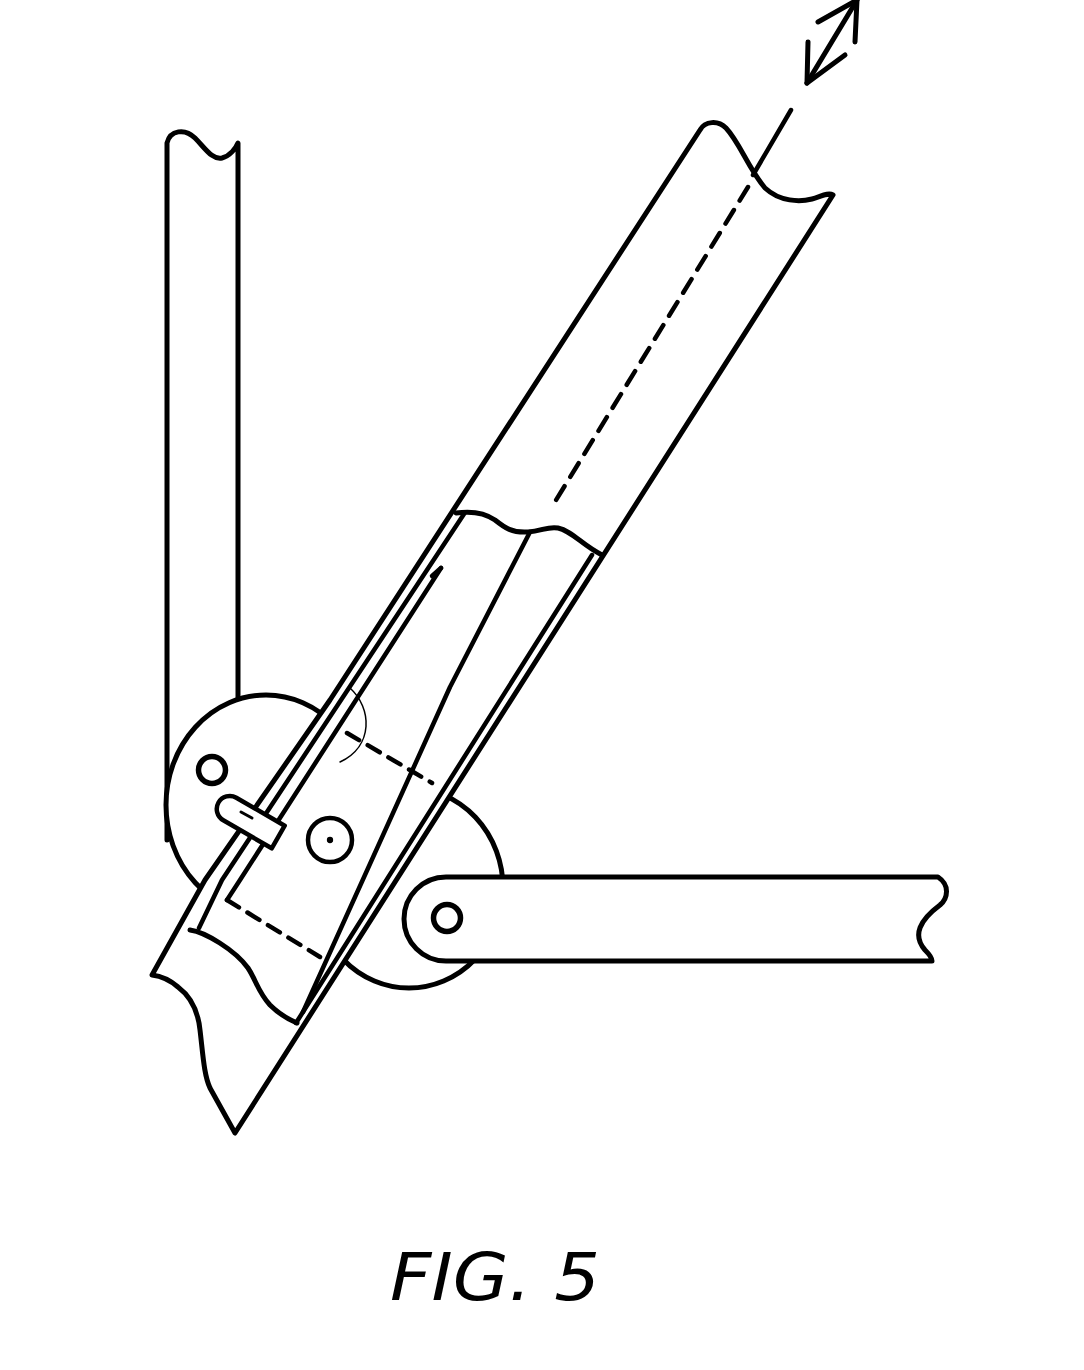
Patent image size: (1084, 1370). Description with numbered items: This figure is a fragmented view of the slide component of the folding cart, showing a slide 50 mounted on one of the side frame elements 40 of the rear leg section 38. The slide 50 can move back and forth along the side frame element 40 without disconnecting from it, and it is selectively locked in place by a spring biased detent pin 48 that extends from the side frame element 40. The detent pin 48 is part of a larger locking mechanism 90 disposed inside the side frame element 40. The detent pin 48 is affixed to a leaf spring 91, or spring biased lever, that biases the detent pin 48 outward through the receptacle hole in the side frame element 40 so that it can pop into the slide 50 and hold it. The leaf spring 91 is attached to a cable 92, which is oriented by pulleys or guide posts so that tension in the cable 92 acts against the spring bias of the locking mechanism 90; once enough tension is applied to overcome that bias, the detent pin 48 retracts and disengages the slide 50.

The rear leg section 38 is at (593, 290).
The side frame element 40 is at (656, 430).
The detent pin 48 is at (228, 809).
The slide 50 is at (420, 987).
The locking mechanism 90 is at (337, 866).
The leaf spring 91 is at (345, 668).
The cable 92 is at (435, 720).